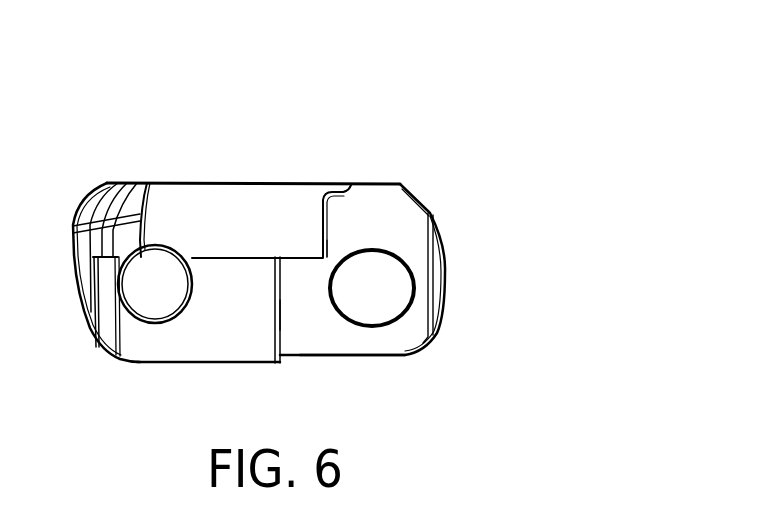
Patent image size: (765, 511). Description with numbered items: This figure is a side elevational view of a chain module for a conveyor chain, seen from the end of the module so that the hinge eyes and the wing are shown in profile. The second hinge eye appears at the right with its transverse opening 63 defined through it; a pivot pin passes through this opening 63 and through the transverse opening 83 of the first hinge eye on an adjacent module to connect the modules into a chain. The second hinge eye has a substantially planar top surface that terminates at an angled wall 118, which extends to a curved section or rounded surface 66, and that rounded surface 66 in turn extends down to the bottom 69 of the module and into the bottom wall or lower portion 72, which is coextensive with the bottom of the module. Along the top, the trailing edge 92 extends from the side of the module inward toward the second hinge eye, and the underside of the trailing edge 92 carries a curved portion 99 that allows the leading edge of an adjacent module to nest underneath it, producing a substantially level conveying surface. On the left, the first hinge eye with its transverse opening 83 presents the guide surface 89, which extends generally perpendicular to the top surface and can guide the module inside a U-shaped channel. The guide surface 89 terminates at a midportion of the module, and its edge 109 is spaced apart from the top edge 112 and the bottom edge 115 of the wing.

The rounded surface 66 is at (445, 233).
The angled wall 118 is at (412, 207).
The top edge of the wing 112 is at (343, 190).
The curved portion 99 is at (346, 192).
The trailing edge 92 is at (350, 185).
The bottom edge of the wing 115 is at (327, 258).
The transverse opening 63 is at (408, 277).
The transverse opening 83 is at (158, 313).
The guide surface 89 is at (232, 320).
The bottom 69 is at (253, 363).
The edge of the guiding surface 109 is at (281, 312).
The lower portion 72 is at (365, 355).